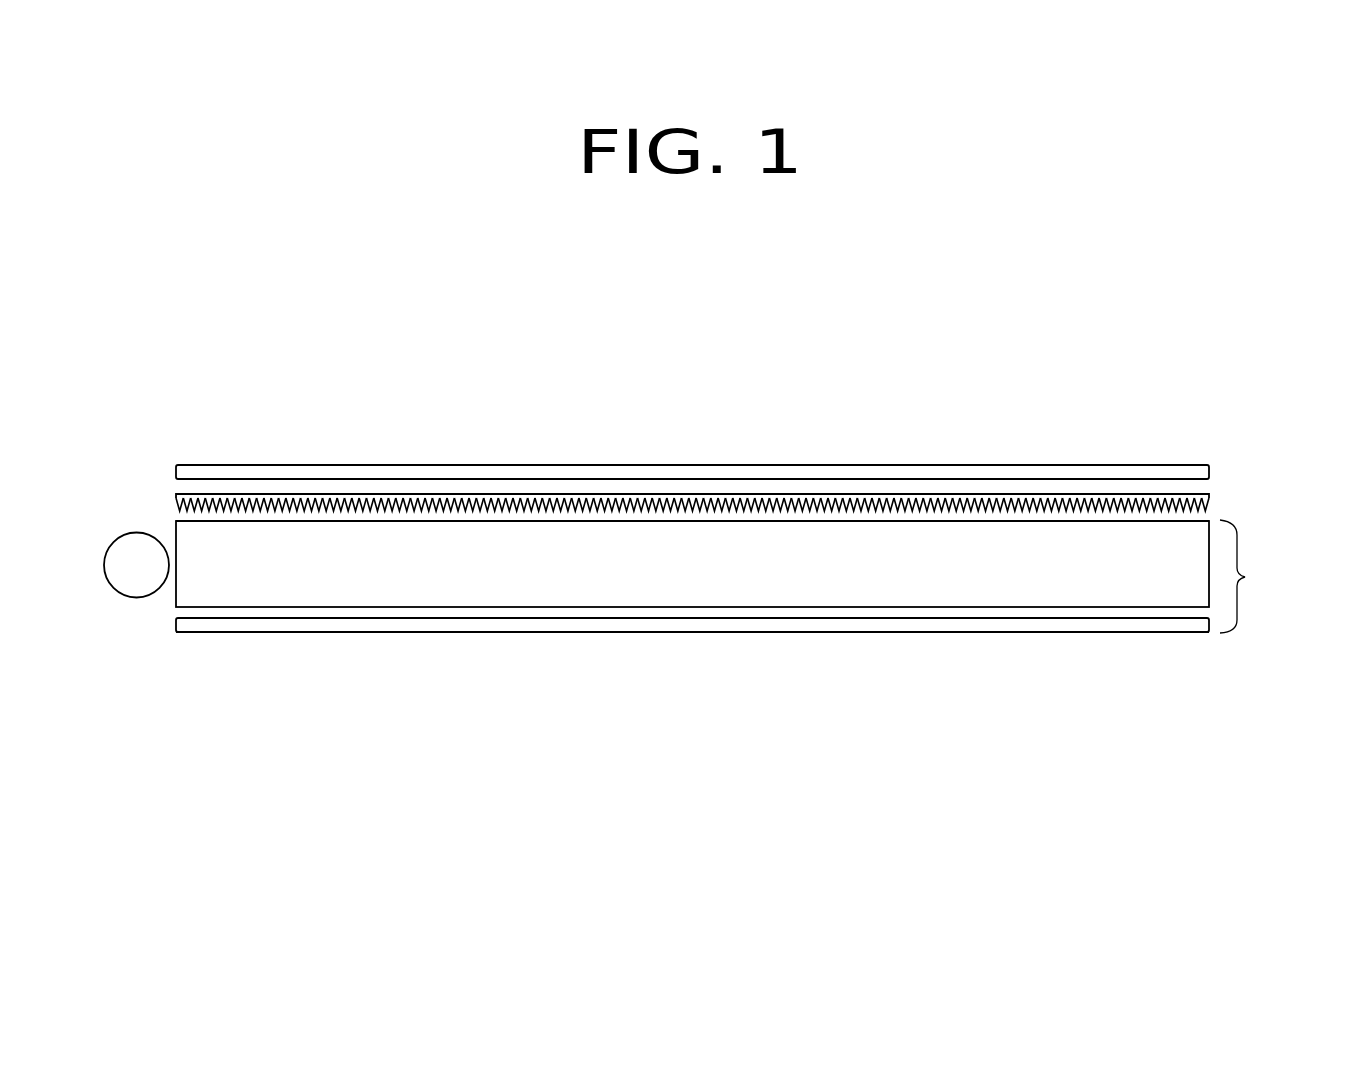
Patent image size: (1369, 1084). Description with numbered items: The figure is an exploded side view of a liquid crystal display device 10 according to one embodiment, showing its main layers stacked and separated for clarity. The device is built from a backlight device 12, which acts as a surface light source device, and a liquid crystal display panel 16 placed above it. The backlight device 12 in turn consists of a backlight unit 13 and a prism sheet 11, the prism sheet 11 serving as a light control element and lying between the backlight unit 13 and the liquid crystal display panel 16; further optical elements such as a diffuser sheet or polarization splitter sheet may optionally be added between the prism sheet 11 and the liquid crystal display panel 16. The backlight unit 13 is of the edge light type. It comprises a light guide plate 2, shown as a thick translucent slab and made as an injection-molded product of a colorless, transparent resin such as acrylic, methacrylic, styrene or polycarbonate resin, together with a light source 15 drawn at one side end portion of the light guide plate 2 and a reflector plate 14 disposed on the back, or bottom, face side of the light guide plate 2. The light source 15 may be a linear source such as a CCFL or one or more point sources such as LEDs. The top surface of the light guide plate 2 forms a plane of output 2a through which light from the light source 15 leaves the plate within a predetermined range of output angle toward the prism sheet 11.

The liquid crystal display device 10 is at (377, 302).
The prism sheet 11 is at (177, 503).
The backlight device 12 is at (355, 648).
The backlight unit 13 is at (1251, 576).
The reflector plate 14 is at (570, 623).
The light source 15 is at (113, 586).
The liquid crystal display panel 16 is at (1081, 468).
The light guide plate 2 is at (760, 583).
The plane of output 2a is at (945, 522).